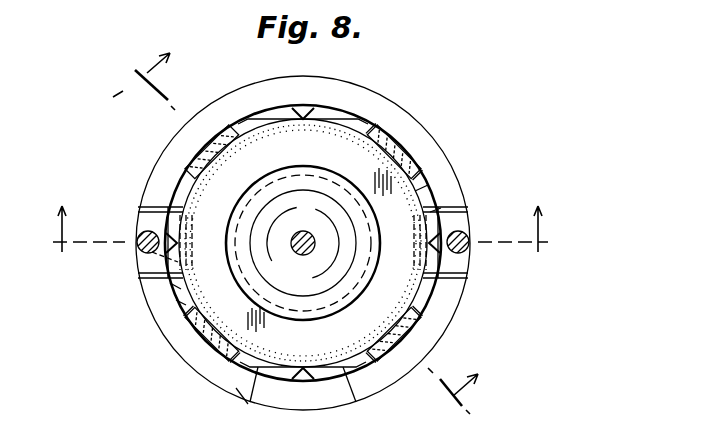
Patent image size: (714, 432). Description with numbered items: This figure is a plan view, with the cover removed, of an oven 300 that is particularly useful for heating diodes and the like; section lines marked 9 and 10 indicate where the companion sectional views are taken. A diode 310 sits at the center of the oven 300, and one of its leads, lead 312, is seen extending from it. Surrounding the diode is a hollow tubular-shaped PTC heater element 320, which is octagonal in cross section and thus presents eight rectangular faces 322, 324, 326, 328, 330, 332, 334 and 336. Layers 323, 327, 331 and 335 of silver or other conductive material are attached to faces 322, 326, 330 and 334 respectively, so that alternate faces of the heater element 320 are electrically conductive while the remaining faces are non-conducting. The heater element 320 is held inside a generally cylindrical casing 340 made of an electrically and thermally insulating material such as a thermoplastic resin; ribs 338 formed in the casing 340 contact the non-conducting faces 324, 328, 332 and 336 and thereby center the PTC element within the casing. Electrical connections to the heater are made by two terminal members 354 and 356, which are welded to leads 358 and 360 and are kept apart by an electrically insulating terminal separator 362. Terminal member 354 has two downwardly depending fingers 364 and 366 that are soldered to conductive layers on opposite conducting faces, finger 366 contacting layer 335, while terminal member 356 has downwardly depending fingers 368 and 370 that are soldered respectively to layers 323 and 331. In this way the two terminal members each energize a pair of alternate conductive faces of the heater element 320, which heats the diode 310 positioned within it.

The oven 300 is at (502, 95).
The diode 310 is at (286, 223).
The lead 312 is at (291, 246).
The PTC heater element 320 is at (252, 400).
The rectangular face 322 is at (248, 385).
The layer of silver or other conductive material 323 is at (236, 370).
The rectangular face 324 is at (177, 285).
The rectangular face 326 is at (180, 182).
The layer of silver or other conductive material 327 is at (187, 185).
The rectangular face 328 is at (275, 118).
The rectangular face 330 is at (362, 126).
The layer of silver or other conductive material 331 is at (392, 143).
The rectangular face 332 is at (445, 197).
The rectangular face 334 is at (442, 297).
The layer of silver or other conductive material 335 is at (445, 316).
The rectangular face 336 is at (347, 388).
The ribs 338 is at (304, 106).
The casing 340 is at (280, 398).
The terminal member 354 is at (284, 340).
The terminal member 356 is at (472, 234).
The lead 358 is at (142, 235).
The lead 360 is at (470, 255).
The terminal separator 362 is at (335, 177).
The finger 364 is at (217, 147).
The finger 366 is at (438, 332).
The finger 368 is at (207, 329).
The finger 370 is at (400, 160).
The section line 9 is at (299, 229).
The section line 10 is at (295, 239).